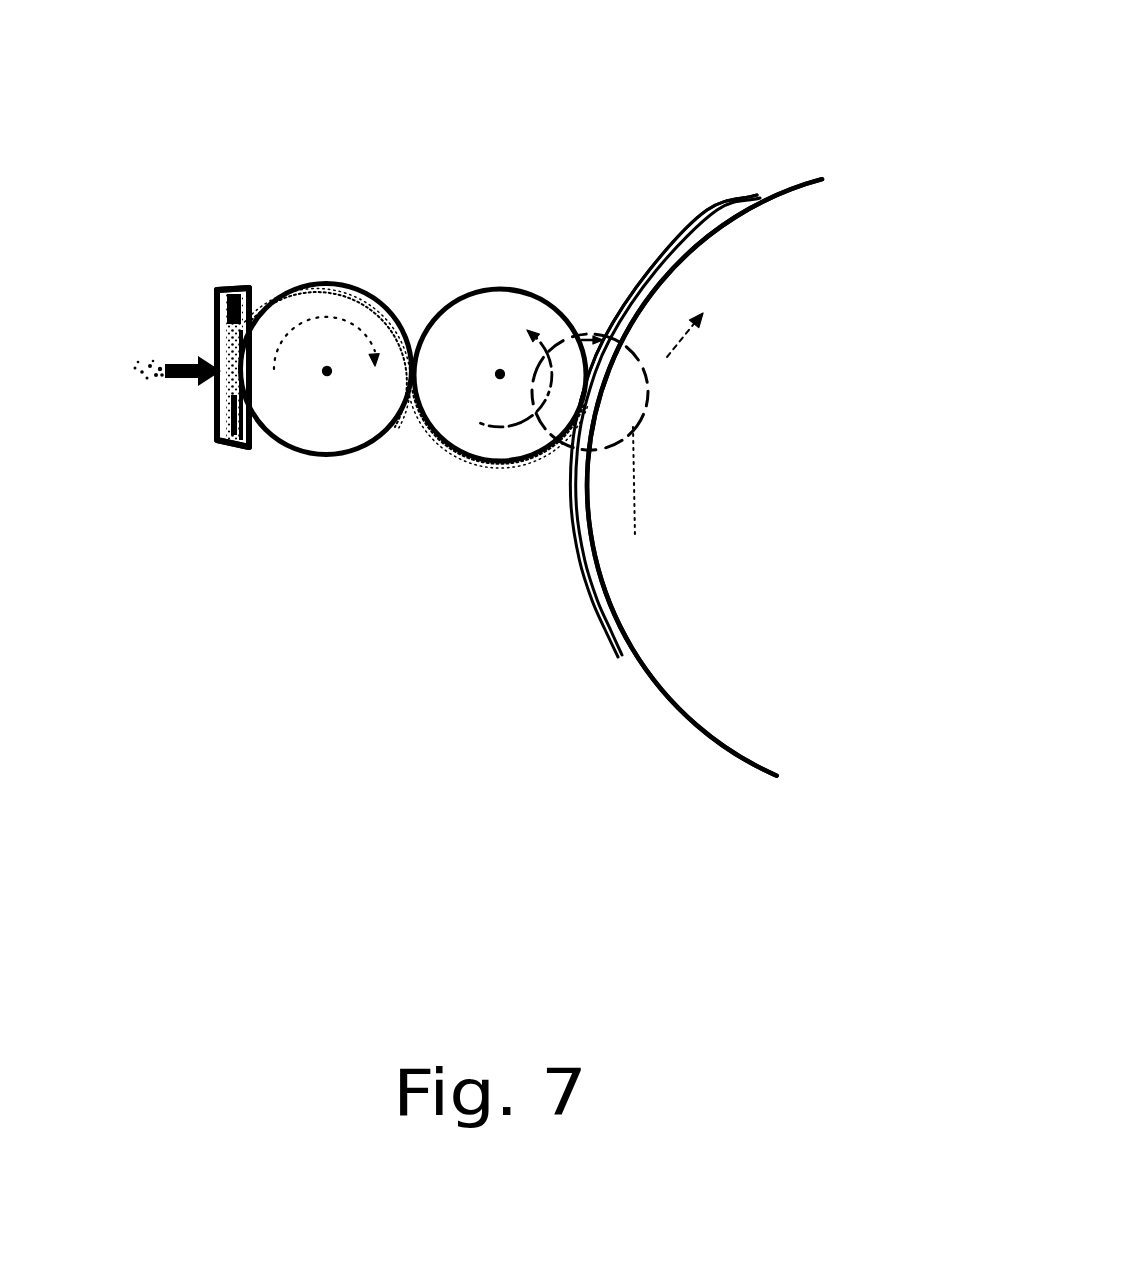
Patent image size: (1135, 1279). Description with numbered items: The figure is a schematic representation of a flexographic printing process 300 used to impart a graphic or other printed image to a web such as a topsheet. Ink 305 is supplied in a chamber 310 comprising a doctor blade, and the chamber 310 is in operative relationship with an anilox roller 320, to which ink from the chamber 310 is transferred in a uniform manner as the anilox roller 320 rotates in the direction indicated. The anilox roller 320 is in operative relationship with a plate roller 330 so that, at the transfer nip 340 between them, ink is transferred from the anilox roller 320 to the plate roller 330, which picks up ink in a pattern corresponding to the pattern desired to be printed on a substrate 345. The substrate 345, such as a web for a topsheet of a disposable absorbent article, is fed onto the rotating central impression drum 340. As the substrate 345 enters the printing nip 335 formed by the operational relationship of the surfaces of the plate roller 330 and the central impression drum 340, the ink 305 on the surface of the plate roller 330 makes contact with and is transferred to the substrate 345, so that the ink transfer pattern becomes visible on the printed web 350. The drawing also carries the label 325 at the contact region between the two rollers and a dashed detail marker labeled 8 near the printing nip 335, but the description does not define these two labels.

The flexographic printing process 300 is at (836, 157).
The ink 305 is at (209, 328).
The chamber 310 is at (205, 452).
The anilox roller 320 is at (312, 295).
The nip between rollers 325 is at (413, 428).
The plate roller 330 is at (498, 320).
The printing nip 335 is at (552, 468).
The central impression drum 340 is at (720, 745).
The substrate 345 is at (605, 632).
The printed web 350 is at (696, 205).
The detail region of Fig. 8 is at (683, 360).